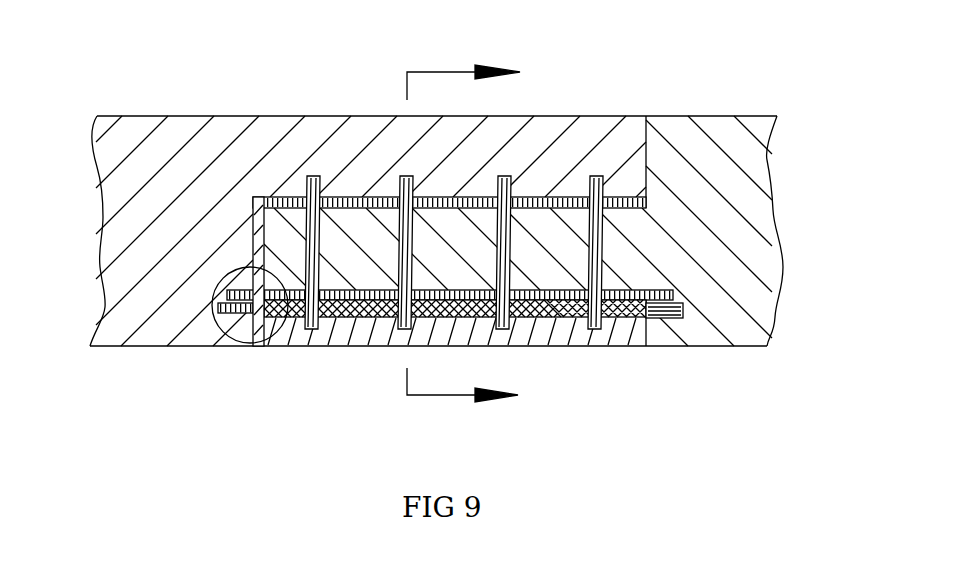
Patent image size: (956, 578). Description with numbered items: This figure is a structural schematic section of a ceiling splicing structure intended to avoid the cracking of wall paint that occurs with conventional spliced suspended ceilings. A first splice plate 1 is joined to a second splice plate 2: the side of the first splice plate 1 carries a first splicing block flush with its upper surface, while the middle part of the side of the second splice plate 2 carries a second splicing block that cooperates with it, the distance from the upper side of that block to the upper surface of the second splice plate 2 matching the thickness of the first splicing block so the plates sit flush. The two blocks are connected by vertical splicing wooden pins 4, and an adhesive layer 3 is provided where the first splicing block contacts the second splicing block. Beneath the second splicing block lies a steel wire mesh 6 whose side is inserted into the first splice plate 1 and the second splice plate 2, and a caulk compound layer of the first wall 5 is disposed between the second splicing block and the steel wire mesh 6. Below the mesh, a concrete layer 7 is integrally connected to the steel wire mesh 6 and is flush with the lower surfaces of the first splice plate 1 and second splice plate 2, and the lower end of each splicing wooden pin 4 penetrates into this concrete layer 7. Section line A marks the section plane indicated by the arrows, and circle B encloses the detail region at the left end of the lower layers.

The first splice plate 1 is at (247, 160).
The second splice plate 2 is at (720, 180).
The adhesive layer 3 is at (357, 200).
The splicing wooden pin 4 is at (600, 190).
The caulk compound layer of the first wall 5 is at (531, 300).
The steel wire mesh 6 is at (625, 312).
The concrete layer 7 is at (372, 326).
The section A- A is at (463, 235).
The detail B is at (240, 347).